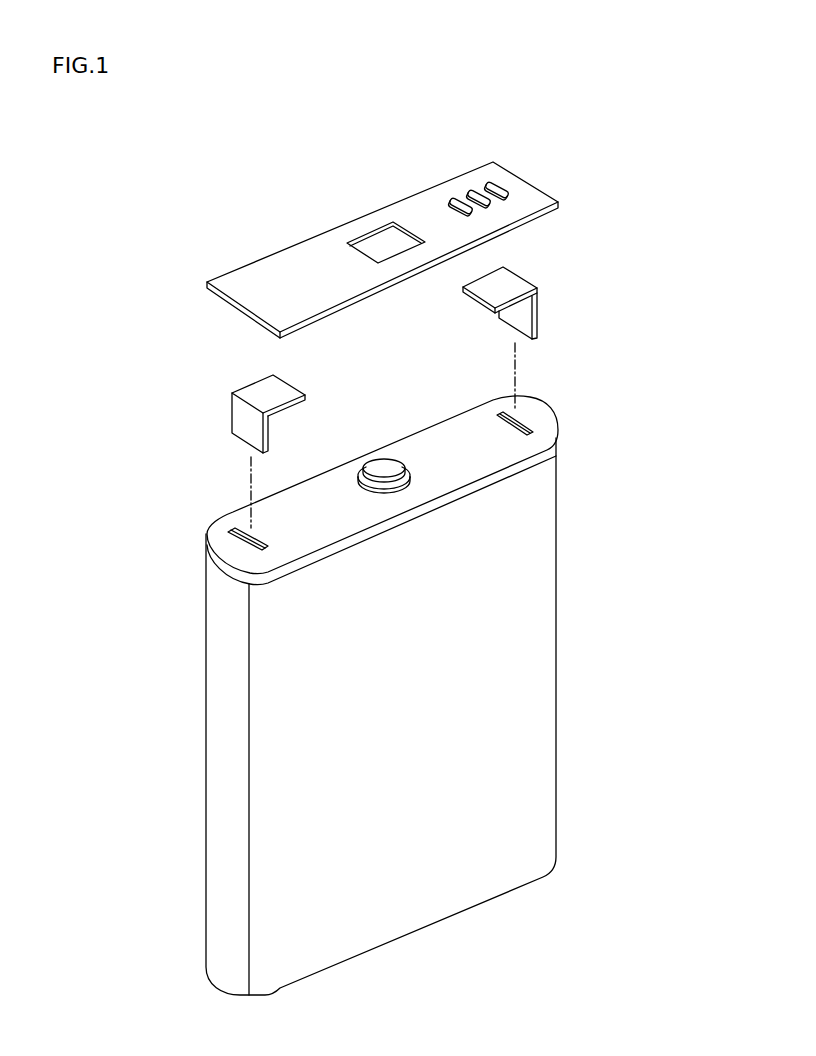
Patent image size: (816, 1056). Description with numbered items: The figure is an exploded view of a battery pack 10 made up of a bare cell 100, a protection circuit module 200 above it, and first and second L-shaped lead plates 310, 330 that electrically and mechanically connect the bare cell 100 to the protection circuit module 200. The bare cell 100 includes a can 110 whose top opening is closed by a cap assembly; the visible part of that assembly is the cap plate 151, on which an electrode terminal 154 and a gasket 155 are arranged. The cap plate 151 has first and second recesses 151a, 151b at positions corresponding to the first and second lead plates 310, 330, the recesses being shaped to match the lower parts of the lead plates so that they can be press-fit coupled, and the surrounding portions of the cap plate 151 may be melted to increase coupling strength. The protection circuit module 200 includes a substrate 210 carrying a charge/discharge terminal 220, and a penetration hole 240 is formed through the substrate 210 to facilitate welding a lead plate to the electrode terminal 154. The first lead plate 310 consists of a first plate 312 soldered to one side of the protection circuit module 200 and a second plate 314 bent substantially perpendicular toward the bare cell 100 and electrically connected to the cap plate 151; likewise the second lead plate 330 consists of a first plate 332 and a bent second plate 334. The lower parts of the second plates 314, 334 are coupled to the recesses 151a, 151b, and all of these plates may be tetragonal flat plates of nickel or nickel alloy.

The battery pack 10 is at (147, 164).
The bare cell 100 is at (191, 628).
The can 110 is at (545, 578).
The cap plate 151 is at (548, 417).
The first recess 151a is at (232, 522).
The second recess 151b is at (498, 410).
The electrode terminal 154 is at (388, 461).
The gasket 155 is at (362, 476).
The protection circuit module 200 is at (191, 283).
The substrate 210 is at (265, 267).
The charge/discharge terminal 220 is at (462, 197).
The penetration hole 240 is at (372, 233).
The first lead plate 310 is at (152, 347).
The first plate 312 is at (247, 390).
The second plate 314 is at (245, 415).
The second lead plate 330 is at (612, 253).
The first plate 332 is at (513, 282).
The second plate 334 is at (532, 315).